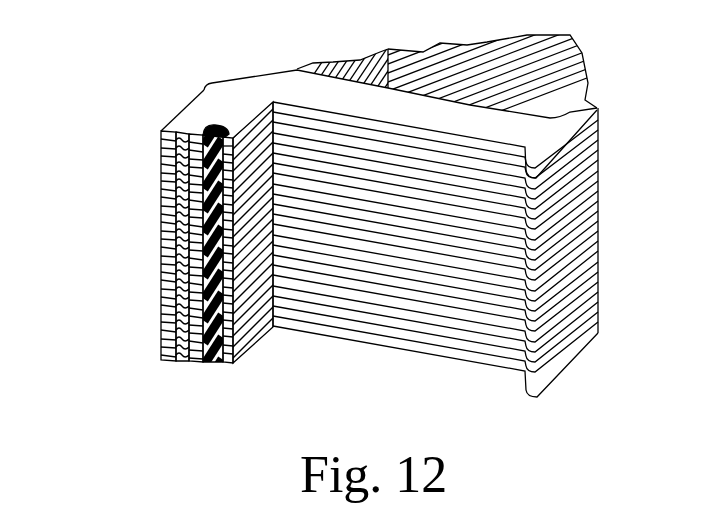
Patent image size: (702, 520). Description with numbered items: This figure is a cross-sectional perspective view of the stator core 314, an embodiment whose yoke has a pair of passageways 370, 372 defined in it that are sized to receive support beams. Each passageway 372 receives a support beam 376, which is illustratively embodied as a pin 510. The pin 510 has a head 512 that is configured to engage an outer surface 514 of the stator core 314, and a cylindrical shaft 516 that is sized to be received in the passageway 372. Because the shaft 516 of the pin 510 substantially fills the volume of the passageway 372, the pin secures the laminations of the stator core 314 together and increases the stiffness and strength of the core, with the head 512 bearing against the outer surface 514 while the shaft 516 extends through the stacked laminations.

The stator core 314 is at (138, 115).
The passageway 370 is at (183, 124).
The pin 510 is at (203, 172).
The outer surface 514 is at (204, 88).
The support beam 376 is at (227, 126).
The head 512 is at (236, 130).
The shaft 516 is at (236, 327).
The passageway 372 is at (213, 374).